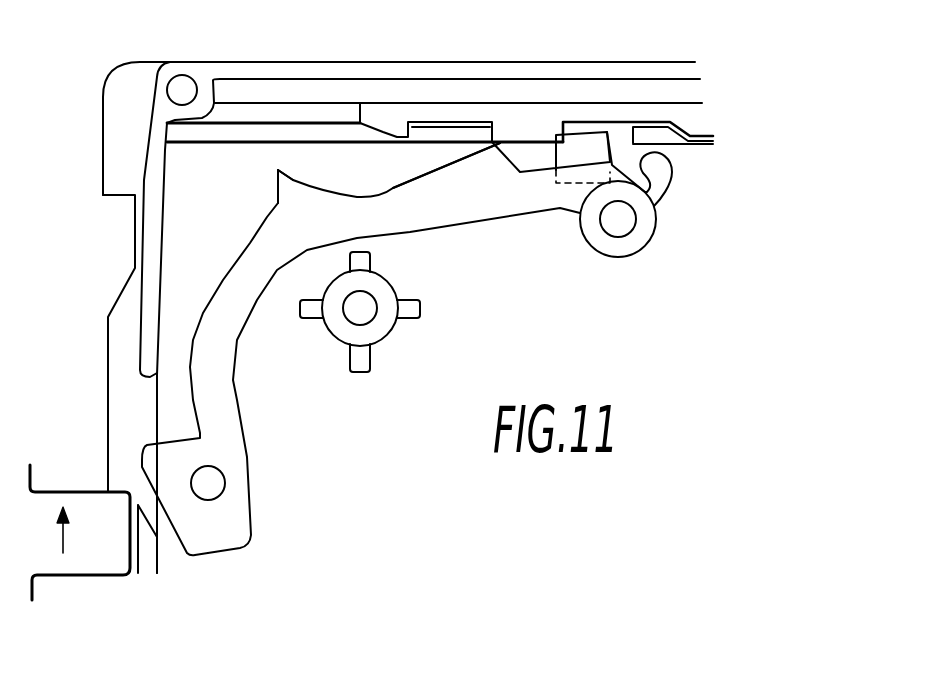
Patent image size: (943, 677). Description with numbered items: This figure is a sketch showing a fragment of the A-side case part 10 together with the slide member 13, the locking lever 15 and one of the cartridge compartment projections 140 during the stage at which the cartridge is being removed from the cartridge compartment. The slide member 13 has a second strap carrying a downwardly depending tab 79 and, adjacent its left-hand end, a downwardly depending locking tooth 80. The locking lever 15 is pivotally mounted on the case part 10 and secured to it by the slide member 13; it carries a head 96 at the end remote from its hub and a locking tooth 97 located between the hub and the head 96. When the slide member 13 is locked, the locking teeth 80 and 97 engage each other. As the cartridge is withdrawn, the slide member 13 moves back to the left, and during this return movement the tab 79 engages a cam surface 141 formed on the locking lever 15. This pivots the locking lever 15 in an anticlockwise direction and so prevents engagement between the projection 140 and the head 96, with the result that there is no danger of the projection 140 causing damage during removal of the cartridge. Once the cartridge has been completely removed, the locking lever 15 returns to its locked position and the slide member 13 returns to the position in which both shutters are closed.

The A-side case part 10 is at (482, 67).
The A-side slide member 13 is at (682, 113).
The locking lever 15 is at (361, 281).
The tab 79 is at (523, 132).
The locking tooth 80 is at (385, 123).
The head 96 is at (202, 522).
The locking tooth 97 is at (290, 183).
The projection 140 is at (88, 515).
The cam surface 141 is at (473, 175).